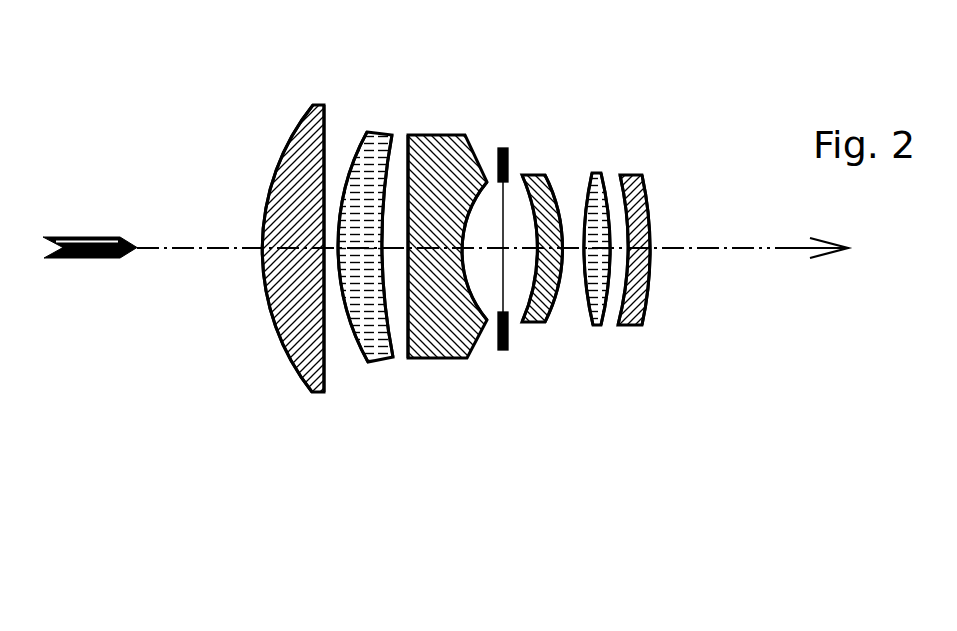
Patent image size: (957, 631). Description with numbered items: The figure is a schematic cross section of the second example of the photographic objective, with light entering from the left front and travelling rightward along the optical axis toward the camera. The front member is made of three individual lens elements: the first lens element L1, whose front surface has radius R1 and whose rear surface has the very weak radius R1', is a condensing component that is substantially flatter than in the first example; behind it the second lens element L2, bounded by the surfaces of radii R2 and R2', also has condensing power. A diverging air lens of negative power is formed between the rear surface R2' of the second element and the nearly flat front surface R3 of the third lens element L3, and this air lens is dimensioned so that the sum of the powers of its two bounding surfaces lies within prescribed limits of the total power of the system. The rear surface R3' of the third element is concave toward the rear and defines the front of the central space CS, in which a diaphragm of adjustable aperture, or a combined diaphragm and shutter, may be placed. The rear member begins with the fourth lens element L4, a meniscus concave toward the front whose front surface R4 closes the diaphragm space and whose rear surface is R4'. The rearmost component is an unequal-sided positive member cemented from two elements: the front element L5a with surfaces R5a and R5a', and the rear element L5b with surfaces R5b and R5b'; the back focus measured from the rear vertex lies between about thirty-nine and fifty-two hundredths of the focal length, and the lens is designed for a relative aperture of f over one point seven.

The first lens element L1 is at (287, 294).
The second lens element L2 is at (373, 307).
The third lens element L3 is at (454, 321).
The fourth lens element L4 is at (539, 318).
The front element of fifth component L5a is at (598, 245).
The rear element of fifth component L5b is at (664, 271).
The front surface radius of first element R1 is at (275, 227).
The rear surface radius of first element R1' is at (319, 205).
The front surface radius of second element R2 is at (355, 213).
The rear surface radius of second element R2' is at (392, 200).
The front surface radius of third element R3 is at (431, 215).
The rear surface radius of third element R3' is at (481, 200).
The front surface radius of fourth element R4 is at (531, 217).
The rear surface radius of fourth element R4' is at (548, 194).
The front surface radius of element 5a R5a is at (587, 219).
The rear surface radius of element 5a R5a' is at (608, 193).
The front surface radius of element 5b R5b is at (648, 219).
The rear surface radius of element 5b R5b' is at (680, 238).
The central space CS is at (490, 249).